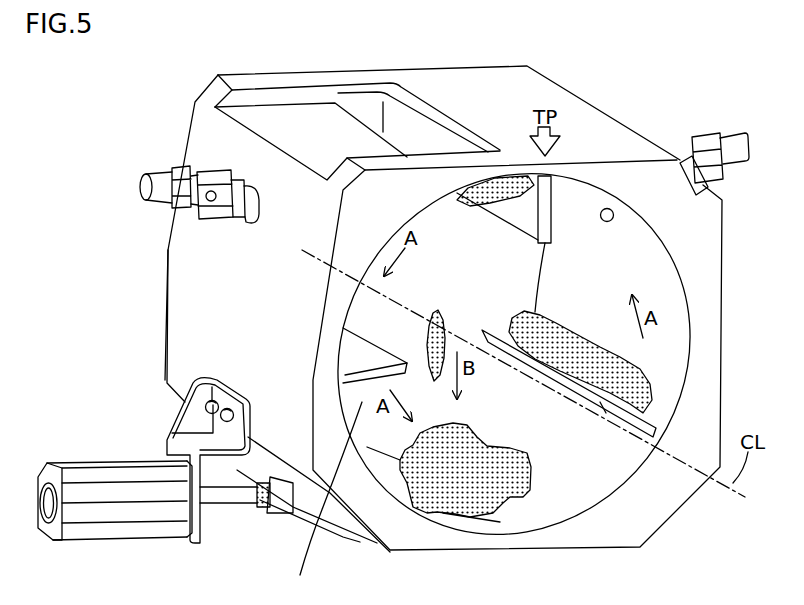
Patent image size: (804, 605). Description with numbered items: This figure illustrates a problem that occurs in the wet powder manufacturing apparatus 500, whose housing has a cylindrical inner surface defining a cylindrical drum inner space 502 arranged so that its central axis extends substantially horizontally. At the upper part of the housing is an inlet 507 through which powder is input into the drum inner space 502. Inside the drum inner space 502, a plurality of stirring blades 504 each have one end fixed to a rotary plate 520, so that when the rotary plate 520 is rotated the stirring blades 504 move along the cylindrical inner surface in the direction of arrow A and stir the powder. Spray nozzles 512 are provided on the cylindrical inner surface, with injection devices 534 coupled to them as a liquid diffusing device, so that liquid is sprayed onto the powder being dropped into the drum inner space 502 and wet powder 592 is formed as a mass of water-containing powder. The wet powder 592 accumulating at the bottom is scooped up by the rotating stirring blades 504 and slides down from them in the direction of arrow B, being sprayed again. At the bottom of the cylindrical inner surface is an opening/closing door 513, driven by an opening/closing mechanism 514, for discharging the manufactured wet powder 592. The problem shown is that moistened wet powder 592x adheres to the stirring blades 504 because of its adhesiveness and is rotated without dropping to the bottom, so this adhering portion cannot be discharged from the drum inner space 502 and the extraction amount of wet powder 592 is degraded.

The wet powder manufacturing apparatus 500 is at (634, 80).
The drum inner space 502 is at (583, 442).
The stirring blades 504 is at (547, 205).
The inlet 507 is at (406, 128).
The spray nozzles 512 is at (608, 222).
The opening/closing door 513 is at (352, 533).
The opening/closing mechanism 514 is at (107, 461).
The rotary plate 520 is at (322, 499).
The injection devices 534 is at (210, 176).
The wet powder 592 is at (500, 487).
The wet powder 592x is at (500, 177).